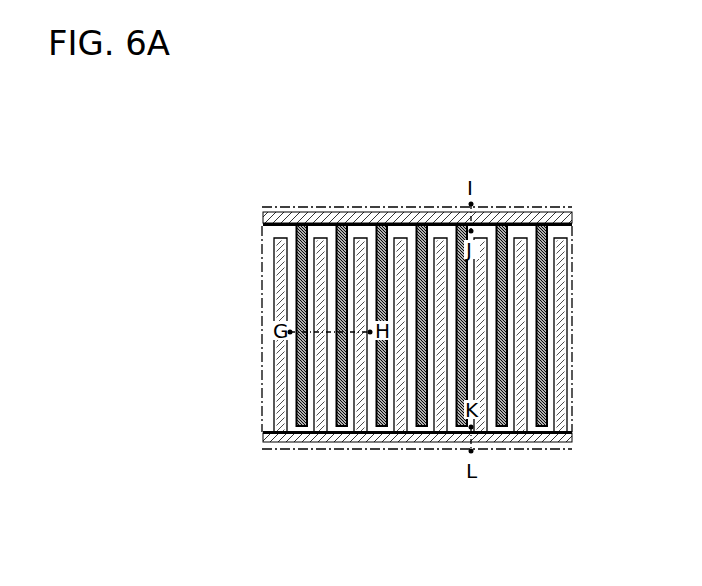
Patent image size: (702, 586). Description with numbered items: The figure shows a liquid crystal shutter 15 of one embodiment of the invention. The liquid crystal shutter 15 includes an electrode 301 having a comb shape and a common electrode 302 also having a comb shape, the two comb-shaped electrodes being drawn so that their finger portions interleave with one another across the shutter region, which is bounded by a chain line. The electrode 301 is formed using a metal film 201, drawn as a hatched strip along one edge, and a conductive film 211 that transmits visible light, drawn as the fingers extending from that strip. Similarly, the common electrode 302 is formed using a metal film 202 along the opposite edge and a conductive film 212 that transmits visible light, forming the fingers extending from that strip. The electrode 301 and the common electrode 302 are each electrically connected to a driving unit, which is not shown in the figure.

The liquid crystal shutter 15 is at (408, 209).
The metal film 201 is at (336, 220).
The conductive film 211 is at (298, 227).
The electrode 301 is at (403, 262).
The metal film 202 is at (440, 440).
The conductive film 212 is at (362, 430).
The common electrode 302 is at (417, 397).